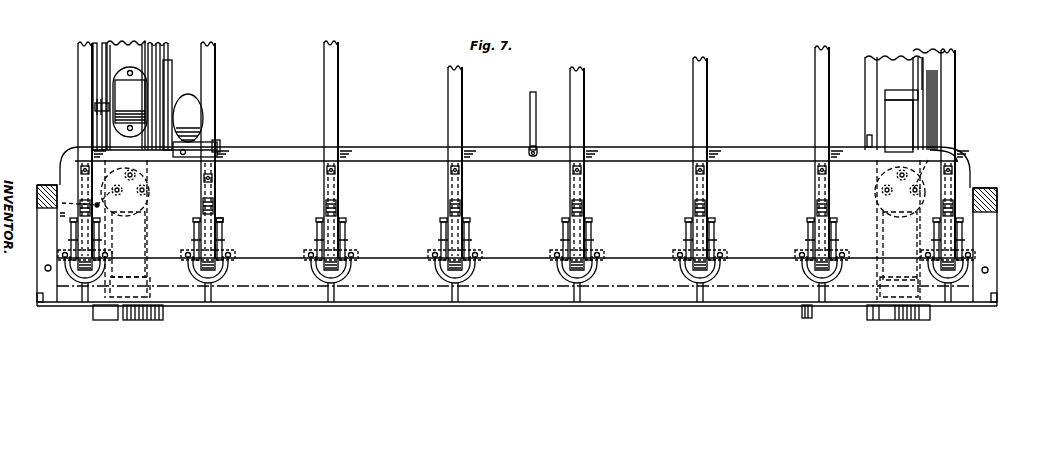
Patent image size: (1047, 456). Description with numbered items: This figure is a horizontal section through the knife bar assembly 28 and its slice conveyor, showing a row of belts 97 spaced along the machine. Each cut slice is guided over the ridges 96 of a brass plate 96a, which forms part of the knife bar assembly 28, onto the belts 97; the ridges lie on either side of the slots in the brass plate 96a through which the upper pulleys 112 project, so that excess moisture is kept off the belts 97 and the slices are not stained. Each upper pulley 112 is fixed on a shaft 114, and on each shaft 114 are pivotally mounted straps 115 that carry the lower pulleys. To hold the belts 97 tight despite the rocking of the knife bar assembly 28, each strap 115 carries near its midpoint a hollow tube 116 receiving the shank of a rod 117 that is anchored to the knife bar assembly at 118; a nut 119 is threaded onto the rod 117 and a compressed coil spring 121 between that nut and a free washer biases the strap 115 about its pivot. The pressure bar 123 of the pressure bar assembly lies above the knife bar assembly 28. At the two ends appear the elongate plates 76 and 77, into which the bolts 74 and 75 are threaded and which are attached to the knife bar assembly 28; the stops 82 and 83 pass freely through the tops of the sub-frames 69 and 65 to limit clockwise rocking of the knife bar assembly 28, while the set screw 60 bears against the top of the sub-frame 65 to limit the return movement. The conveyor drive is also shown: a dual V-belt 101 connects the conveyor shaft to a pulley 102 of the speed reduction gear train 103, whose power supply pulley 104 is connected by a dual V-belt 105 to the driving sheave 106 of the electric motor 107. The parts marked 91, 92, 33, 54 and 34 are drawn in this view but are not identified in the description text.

The belts 97 is at (78, 98).
The knife bar assembly 28 is at (531, 211).
The pressure bar 123 is at (381, 282).
The rod 117 is at (213, 187).
The nut 119 is at (213, 205).
The anchor point of rod 118 is at (450, 177).
The compressed coil spring 121 is at (450, 204).
The straps 115 is at (193, 237).
The upper pulley 112 is at (222, 237).
The hollow tube 116 is at (467, 213).
The shaft 114 is at (196, 279).
The brass plate 96a is at (635, 270).
The ridges 96 is at (721, 268).
The elongate plate 76 is at (148, 242).
The bolt 74 is at (147, 191).
The stop 82 is at (130, 169).
The elongate plate 77 is at (880, 233).
The bolt 75 is at (882, 191).
The stop 83 is at (904, 170).
The dual V-belt 101 is at (95, 67).
The housing 91 is at (118, 43).
The speed reduction gear train 103 is at (130, 102).
The pulley 102 is at (100, 109).
The power supply pulley 104 is at (168, 80).
The dual V-belt 105 is at (173, 110).
The electric motor 107 is at (200, 124).
The sub-frame 69 is at (117, 143).
The driving sheave 106 is at (168, 163).
The sub-frame 65 is at (892, 113).
The rod bundle 92 is at (930, 53).
The set screw 60 is at (943, 155).
The foot 33 is at (163, 315).
The foot 54 is at (802, 317).
The foot 34 is at (928, 315).